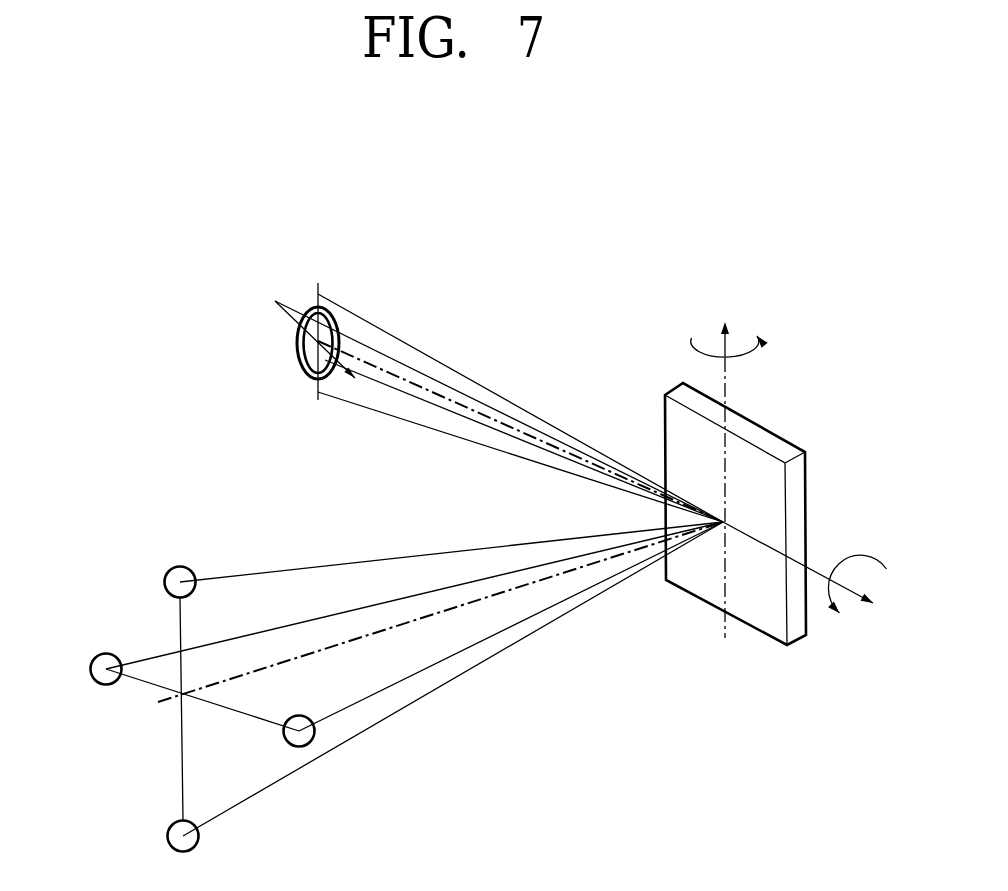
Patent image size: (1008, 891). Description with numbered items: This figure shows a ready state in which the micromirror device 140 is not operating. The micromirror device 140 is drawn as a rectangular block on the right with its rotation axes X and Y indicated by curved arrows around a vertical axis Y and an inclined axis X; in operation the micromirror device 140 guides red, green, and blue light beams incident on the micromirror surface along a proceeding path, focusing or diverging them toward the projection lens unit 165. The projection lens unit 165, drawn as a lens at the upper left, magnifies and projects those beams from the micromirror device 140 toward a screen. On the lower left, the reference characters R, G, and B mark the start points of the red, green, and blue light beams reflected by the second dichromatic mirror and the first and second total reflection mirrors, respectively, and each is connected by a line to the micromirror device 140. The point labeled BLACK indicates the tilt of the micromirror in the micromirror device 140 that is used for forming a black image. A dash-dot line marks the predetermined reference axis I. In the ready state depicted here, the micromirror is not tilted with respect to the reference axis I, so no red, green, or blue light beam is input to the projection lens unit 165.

The projection lens unit 165 is at (305, 373).
The micromirror device 140 is at (780, 400).
The green light beam start point G is at (173, 565).
The blue light beam start point B is at (97, 653).
The red light beam start point R is at (317, 743).
The black image tilt position BLACK is at (429, 704).
The reference axis I is at (432, 623).
The X rotation axis X is at (807, 571).
The Y rotation axis Y is at (729, 464).